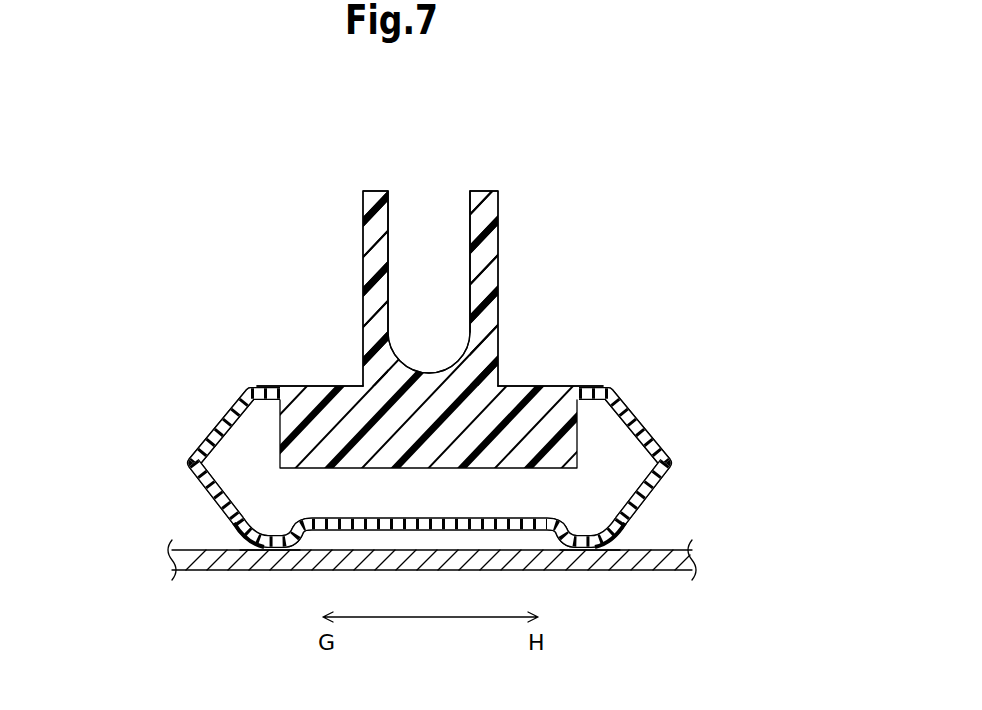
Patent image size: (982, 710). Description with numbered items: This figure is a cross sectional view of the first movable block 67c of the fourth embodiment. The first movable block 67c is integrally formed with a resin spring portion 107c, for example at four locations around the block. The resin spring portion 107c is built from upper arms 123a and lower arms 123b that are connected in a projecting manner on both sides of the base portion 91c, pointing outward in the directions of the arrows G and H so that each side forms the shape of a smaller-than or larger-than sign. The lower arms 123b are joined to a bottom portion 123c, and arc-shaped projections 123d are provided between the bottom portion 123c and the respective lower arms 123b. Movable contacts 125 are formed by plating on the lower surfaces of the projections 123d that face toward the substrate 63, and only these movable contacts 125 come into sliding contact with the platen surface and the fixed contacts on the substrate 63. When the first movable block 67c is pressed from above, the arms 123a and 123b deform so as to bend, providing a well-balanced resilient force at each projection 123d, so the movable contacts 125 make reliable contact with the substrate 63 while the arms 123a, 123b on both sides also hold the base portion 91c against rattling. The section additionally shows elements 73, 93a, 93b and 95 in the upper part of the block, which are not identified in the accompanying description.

The terminal 73 is at (362, 282).
The first prong of terminal 93a is at (368, 191).
The second prong of terminal 93b is at (485, 191).
The slot between prongs 95 is at (392, 245).
The first movable block 67c is at (568, 298).
The base portion 91c is at (562, 387).
The resin spring portion 107c is at (662, 420).
The upper arm 123a is at (218, 410).
The lower arm 123b is at (213, 505).
The bottom portion 123c is at (465, 512).
The arc-shaped projection 123d is at (258, 530).
The movable contact 125 is at (288, 570).
The substrate 63 is at (175, 549).